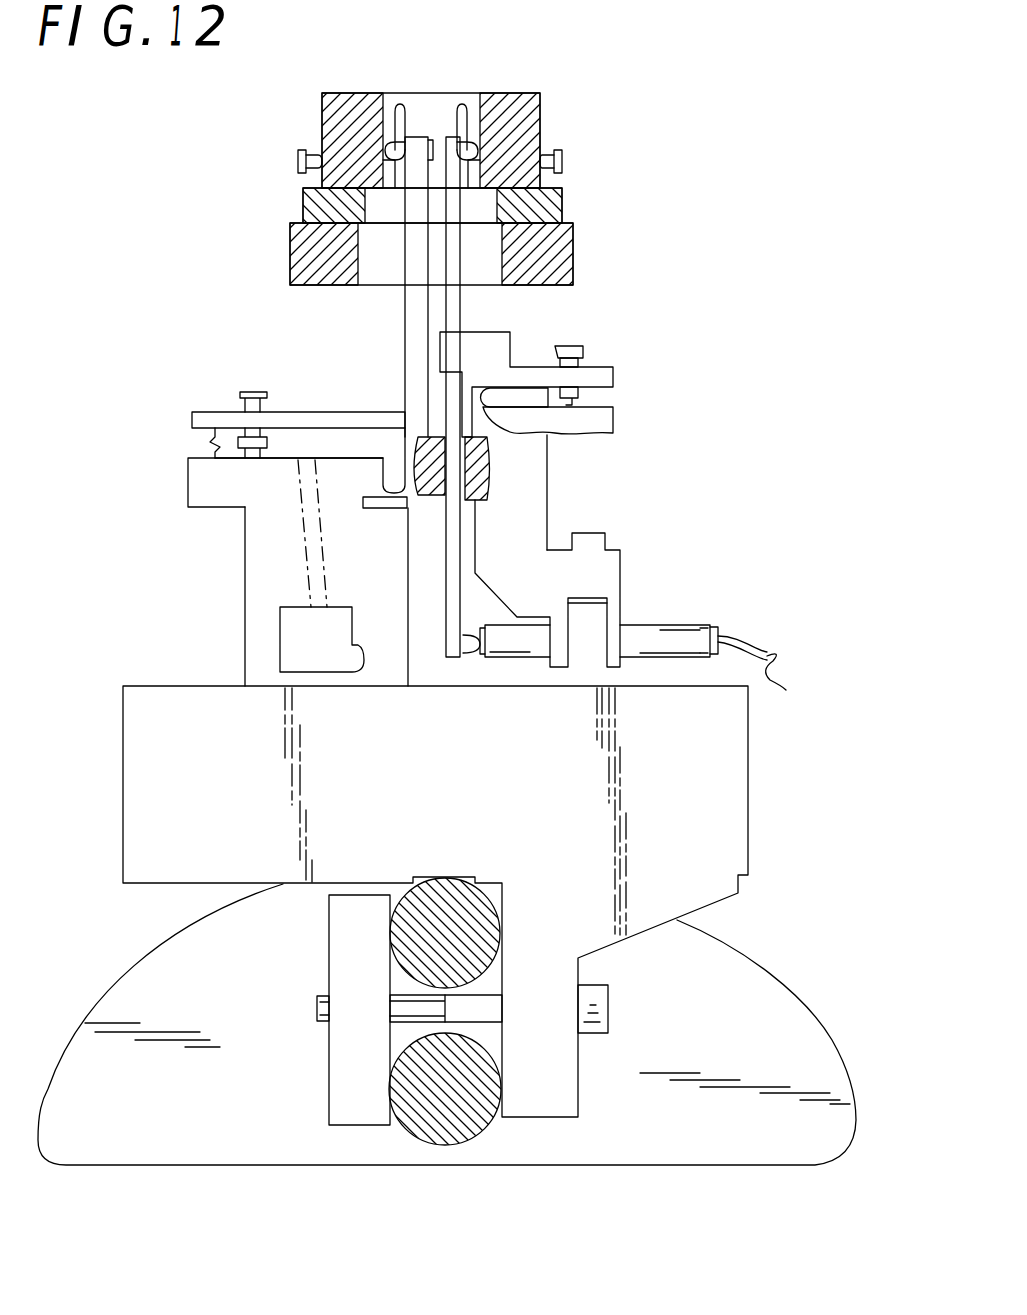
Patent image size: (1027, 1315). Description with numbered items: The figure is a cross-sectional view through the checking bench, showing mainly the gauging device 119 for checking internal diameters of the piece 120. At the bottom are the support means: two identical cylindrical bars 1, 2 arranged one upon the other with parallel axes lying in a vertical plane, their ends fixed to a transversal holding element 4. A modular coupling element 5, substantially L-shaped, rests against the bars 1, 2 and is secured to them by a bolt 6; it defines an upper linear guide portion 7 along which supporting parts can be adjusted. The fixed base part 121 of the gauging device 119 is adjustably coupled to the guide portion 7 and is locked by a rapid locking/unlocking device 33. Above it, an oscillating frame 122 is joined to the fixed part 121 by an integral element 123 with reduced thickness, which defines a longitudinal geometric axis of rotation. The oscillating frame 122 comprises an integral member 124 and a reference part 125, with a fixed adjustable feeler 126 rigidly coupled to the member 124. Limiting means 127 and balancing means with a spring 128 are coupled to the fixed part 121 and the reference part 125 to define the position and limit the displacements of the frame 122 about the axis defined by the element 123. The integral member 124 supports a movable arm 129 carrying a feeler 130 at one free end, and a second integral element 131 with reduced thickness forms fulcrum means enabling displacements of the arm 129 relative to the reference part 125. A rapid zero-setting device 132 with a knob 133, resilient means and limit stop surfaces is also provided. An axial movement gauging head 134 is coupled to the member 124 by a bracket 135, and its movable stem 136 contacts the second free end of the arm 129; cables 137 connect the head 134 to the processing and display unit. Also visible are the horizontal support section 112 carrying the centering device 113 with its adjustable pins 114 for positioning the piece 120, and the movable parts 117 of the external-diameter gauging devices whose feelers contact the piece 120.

The cylindrical bar 1 is at (400, 934).
The cylindrical bar 2 is at (400, 1088).
The transversal holding element 4 is at (140, 978).
The modular coupling element 5 is at (146, 778).
The bolt 6 is at (310, 1112).
The linear guide portion 7 is at (147, 680).
The rapid locking/unlocking device 33 is at (304, 637).
The horizontal support section 112 is at (300, 262).
The centering device 113 is at (305, 200).
The adjustable pins 114 is at (458, 108).
The movable parts 117 is at (305, 152).
The gauging device 119 is at (285, 318).
The piece 120 is at (525, 100).
The fixed base part 121 is at (283, 578).
The oscillating frame 122 is at (584, 488).
The integral element with reduced thickness 123 is at (358, 484).
The integral member 124 is at (605, 422).
The reference part 125 is at (413, 404).
The fixed adjustable feeler 126 is at (398, 106).
The limiting means 127 is at (245, 396).
The spring 128 is at (212, 450).
The movable arm 129 is at (465, 300).
The feeler 130 is at (466, 105).
The second integral element with reduced thickness 131 is at (550, 428).
The rapid zero-setting device 132 is at (598, 360).
The knob 133 is at (570, 345).
The axial movement gauging head 134 is at (673, 633).
The bracket 135 is at (588, 618).
The movable stem 136 is at (470, 637).
The cables 137 is at (769, 681).